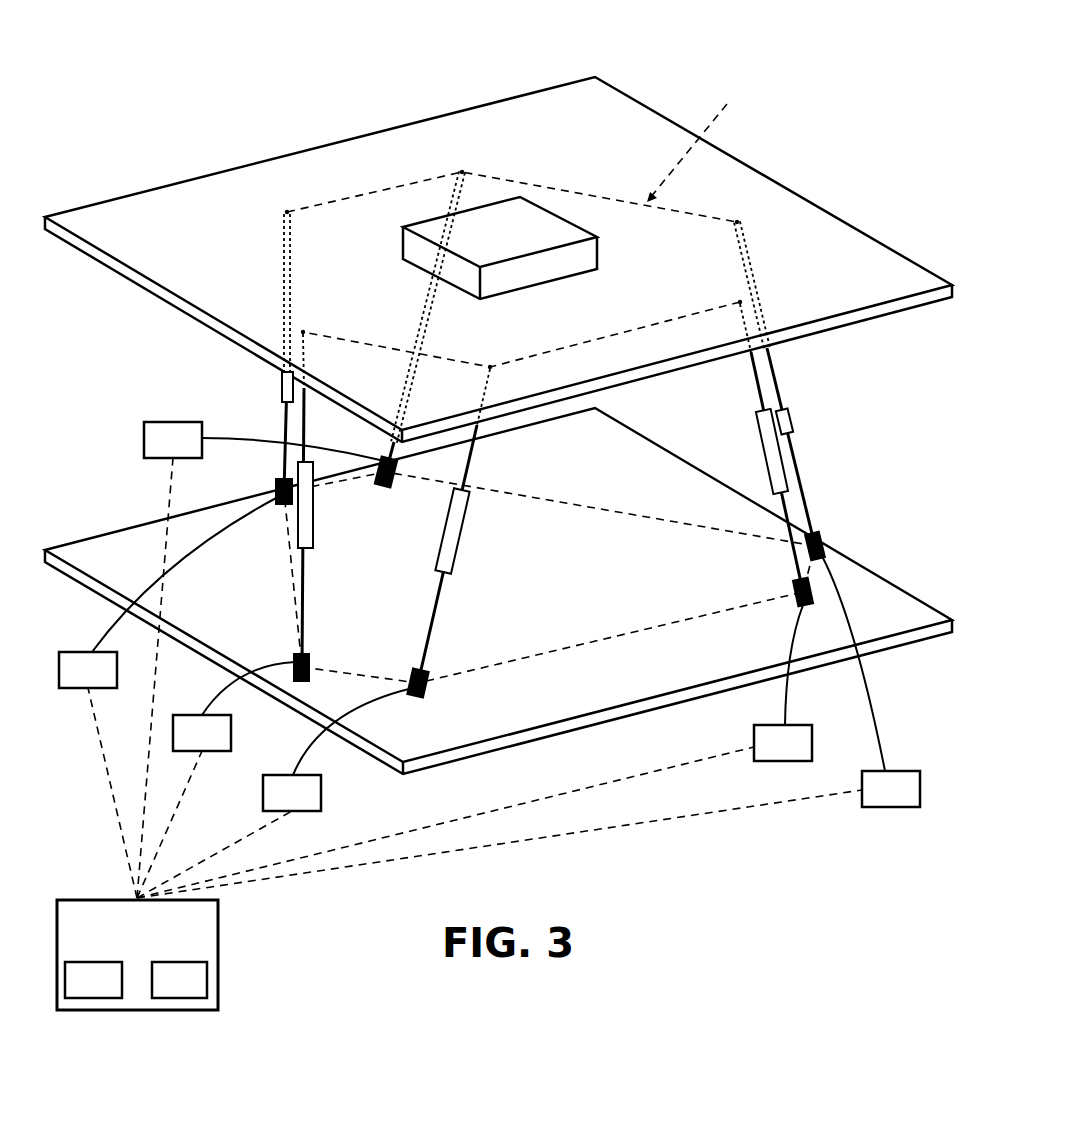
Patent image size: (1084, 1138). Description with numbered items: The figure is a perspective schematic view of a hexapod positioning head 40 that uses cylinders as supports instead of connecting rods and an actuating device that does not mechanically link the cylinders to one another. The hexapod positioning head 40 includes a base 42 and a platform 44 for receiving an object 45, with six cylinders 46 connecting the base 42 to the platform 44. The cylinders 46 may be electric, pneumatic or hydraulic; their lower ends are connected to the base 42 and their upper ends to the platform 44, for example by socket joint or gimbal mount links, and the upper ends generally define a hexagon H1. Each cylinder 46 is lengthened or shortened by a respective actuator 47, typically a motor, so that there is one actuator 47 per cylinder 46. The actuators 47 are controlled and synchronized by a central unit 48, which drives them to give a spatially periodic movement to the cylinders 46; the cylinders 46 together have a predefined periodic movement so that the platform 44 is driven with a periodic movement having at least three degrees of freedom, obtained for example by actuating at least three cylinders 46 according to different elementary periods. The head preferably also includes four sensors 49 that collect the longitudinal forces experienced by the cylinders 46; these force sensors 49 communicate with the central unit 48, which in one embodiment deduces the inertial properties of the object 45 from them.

The hexapod positioning head 40 is at (648, 80).
The base 42 is at (877, 622).
The platform 44 is at (498, 100).
The object 45 is at (432, 228).
The cylinder 46 is at (305, 428).
The actuator 47 is at (489, 660).
The central unit 48 is at (95, 1011).
The sensor 49 is at (285, 210).
The hexagon H1 is at (698, 139).